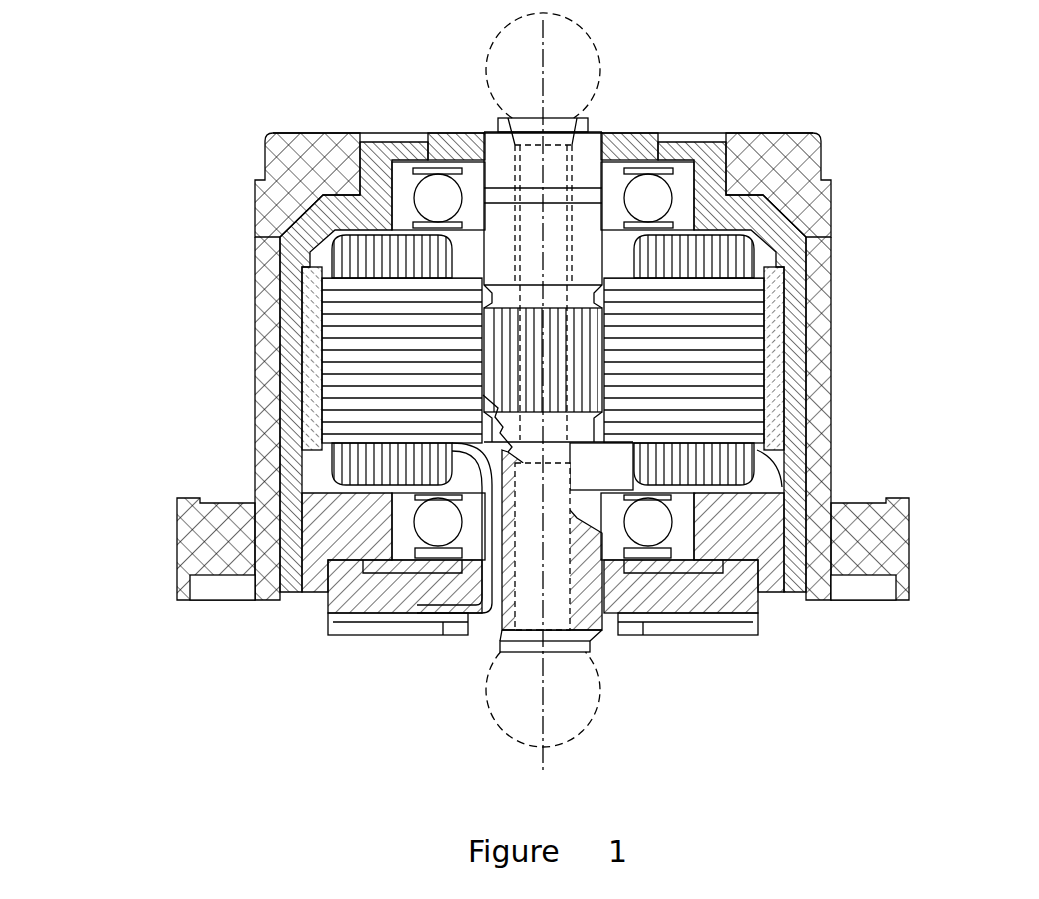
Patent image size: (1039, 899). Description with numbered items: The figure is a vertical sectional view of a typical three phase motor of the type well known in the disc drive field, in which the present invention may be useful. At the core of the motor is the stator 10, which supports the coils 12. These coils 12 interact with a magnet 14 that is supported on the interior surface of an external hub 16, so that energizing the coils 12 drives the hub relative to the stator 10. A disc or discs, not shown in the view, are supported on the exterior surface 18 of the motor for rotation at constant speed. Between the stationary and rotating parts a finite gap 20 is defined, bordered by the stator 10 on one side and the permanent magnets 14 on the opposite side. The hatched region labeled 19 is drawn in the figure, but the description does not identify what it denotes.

The stator 10 is at (337, 395).
The coils 12 is at (345, 256).
The magnet 14 is at (308, 338).
The external hub 16 is at (267, 393).
The exterior surface 18 is at (257, 208).
The bearing support frame 19 is at (797, 362).
The finite gap 20 is at (803, 492).